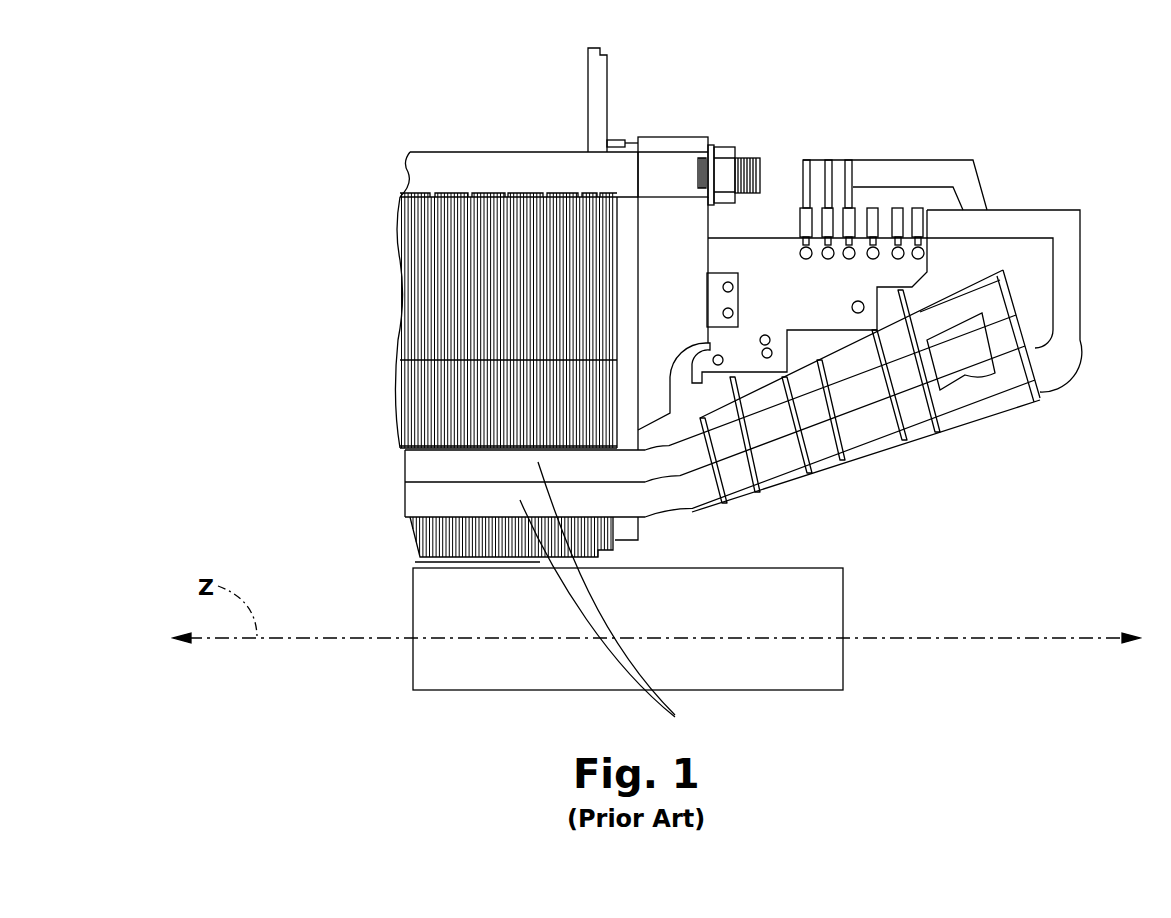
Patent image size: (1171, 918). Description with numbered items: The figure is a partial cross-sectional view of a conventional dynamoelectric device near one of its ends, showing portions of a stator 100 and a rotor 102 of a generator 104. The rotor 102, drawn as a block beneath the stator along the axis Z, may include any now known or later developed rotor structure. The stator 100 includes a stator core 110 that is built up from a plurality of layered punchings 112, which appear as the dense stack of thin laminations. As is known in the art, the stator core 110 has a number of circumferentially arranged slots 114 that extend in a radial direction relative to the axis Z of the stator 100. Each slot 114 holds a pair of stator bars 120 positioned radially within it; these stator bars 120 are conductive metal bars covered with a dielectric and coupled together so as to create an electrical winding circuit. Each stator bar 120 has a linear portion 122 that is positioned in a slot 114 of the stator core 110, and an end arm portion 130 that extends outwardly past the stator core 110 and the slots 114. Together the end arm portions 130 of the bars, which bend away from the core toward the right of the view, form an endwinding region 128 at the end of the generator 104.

The stator 100 is at (452, 144).
The rotor 102 is at (480, 662).
The generator 104 is at (262, 450).
The stator core 110 is at (368, 227).
The layered punchings 112 is at (430, 356).
The slots 114 is at (403, 443).
The stator bars 120 is at (437, 500).
The linear portion 122 is at (621, 594).
The endwinding region 128 is at (1038, 413).
The end arm portion 130 is at (800, 386).